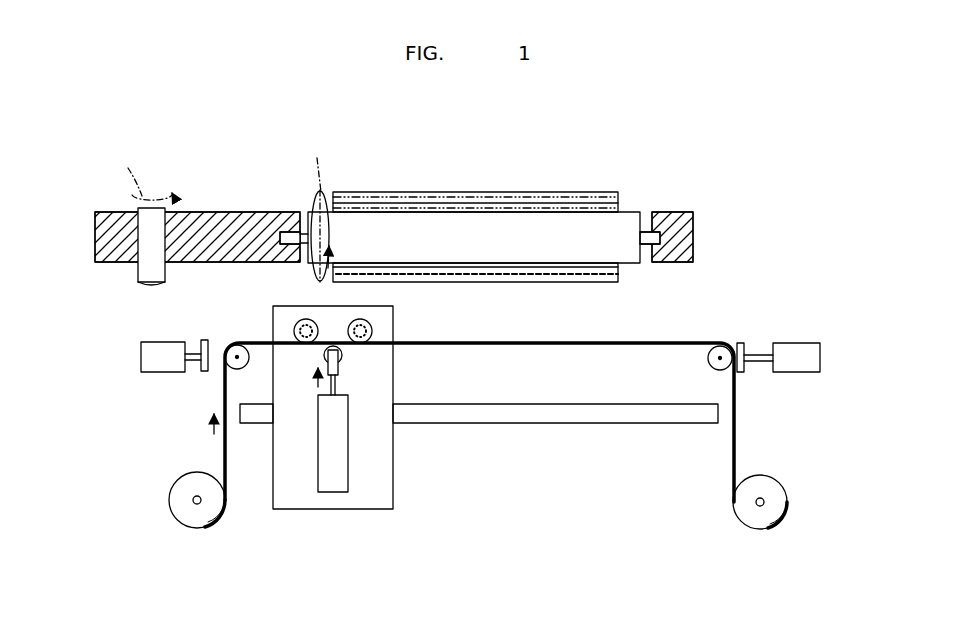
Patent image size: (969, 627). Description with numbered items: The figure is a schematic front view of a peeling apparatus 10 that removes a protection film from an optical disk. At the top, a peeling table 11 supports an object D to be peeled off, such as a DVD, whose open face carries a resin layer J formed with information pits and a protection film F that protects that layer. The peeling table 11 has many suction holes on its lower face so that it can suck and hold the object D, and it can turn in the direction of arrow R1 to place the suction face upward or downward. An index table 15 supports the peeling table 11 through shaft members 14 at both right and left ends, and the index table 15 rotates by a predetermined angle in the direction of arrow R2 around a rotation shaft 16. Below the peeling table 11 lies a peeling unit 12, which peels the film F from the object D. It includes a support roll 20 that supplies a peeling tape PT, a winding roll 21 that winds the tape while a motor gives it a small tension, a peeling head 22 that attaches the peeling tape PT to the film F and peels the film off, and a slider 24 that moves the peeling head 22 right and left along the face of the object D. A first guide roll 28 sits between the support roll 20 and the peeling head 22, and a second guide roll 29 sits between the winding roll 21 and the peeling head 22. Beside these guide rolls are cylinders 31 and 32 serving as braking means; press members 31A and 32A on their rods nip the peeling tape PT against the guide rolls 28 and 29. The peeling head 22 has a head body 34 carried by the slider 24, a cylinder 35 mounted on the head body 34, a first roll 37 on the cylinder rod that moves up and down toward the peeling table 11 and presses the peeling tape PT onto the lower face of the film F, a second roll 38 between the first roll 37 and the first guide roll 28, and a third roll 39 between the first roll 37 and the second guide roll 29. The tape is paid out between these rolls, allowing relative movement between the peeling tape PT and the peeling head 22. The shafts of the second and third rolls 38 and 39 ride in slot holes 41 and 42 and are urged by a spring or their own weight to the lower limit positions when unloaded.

The peeling apparatus 10 is at (681, 135).
The peeling table 11 is at (399, 215).
The peeling unit 12 is at (460, 578).
The shaft members 14 is at (283, 226).
The index table 15 is at (190, 212).
The rotation shaft 16 is at (138, 270).
The support roll 20 is at (192, 527).
The winding roll 21 is at (766, 527).
The peeling head 22 is at (390, 518).
The slider 24 is at (552, 424).
The first guide roll 28 is at (241, 345).
The second guide roll 29 is at (707, 363).
The cylinder 31 is at (159, 373).
The press member 31A is at (205, 343).
The cylinder 32 is at (798, 343).
The press member 32A is at (744, 373).
The head body 34 is at (345, 509).
The cylinder 35 is at (340, 470).
The first roll 37 is at (338, 358).
The second roll 38 is at (298, 344).
The third roll 39 is at (374, 332).
The slot hole 41 is at (297, 315).
The slot hole 42 is at (373, 318).
The peeling tape PT is at (436, 348).
The arrow R1 is at (319, 211).
The arrow R2 is at (140, 172).
The protection film F is at (488, 196).
The resin layer J is at (551, 192).
The object to be peeled off D is at (618, 197).